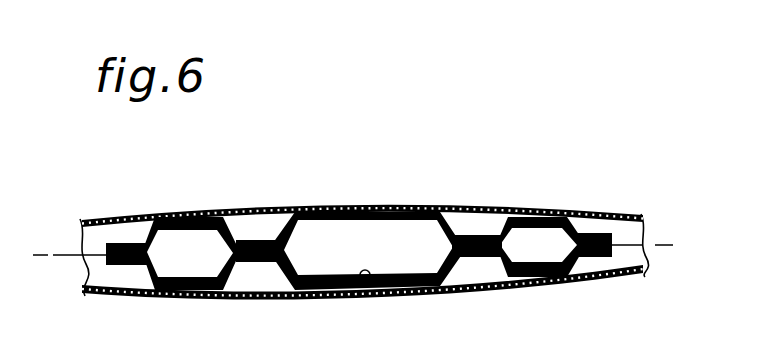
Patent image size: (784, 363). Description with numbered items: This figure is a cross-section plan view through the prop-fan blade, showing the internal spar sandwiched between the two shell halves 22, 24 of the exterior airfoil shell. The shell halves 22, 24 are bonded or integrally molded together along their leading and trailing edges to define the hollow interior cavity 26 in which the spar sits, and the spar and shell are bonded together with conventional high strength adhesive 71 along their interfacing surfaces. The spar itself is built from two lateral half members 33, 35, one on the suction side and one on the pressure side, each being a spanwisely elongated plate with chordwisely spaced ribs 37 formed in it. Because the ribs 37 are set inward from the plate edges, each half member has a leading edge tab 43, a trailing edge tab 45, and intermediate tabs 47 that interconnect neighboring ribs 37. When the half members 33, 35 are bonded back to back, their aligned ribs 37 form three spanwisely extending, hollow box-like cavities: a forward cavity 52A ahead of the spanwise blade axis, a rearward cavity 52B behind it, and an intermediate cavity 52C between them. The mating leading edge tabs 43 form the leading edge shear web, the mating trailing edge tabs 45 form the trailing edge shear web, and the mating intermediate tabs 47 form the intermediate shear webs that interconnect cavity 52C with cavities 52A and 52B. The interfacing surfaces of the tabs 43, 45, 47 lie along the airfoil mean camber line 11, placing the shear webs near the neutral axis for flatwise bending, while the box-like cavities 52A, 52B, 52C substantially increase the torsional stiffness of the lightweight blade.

The airfoil mean camber line 11 is at (60, 255).
The shell half 22 is at (506, 213).
The shell half 24 is at (607, 274).
The hollow interior cavity 26 is at (107, 276).
The spar half member 33 is at (452, 229).
The spar half member 35 is at (282, 267).
The ribs 37 is at (168, 216).
The leading edge tab 43 is at (128, 243).
The trailing edge tab 45 is at (589, 233).
The intermediate tab 47 is at (253, 240).
The high strength adhesive 71 is at (365, 279).
The forward cavity 52A is at (207, 262).
The rearward cavity 52B is at (557, 257).
The intermediate cavity 52C is at (383, 262).